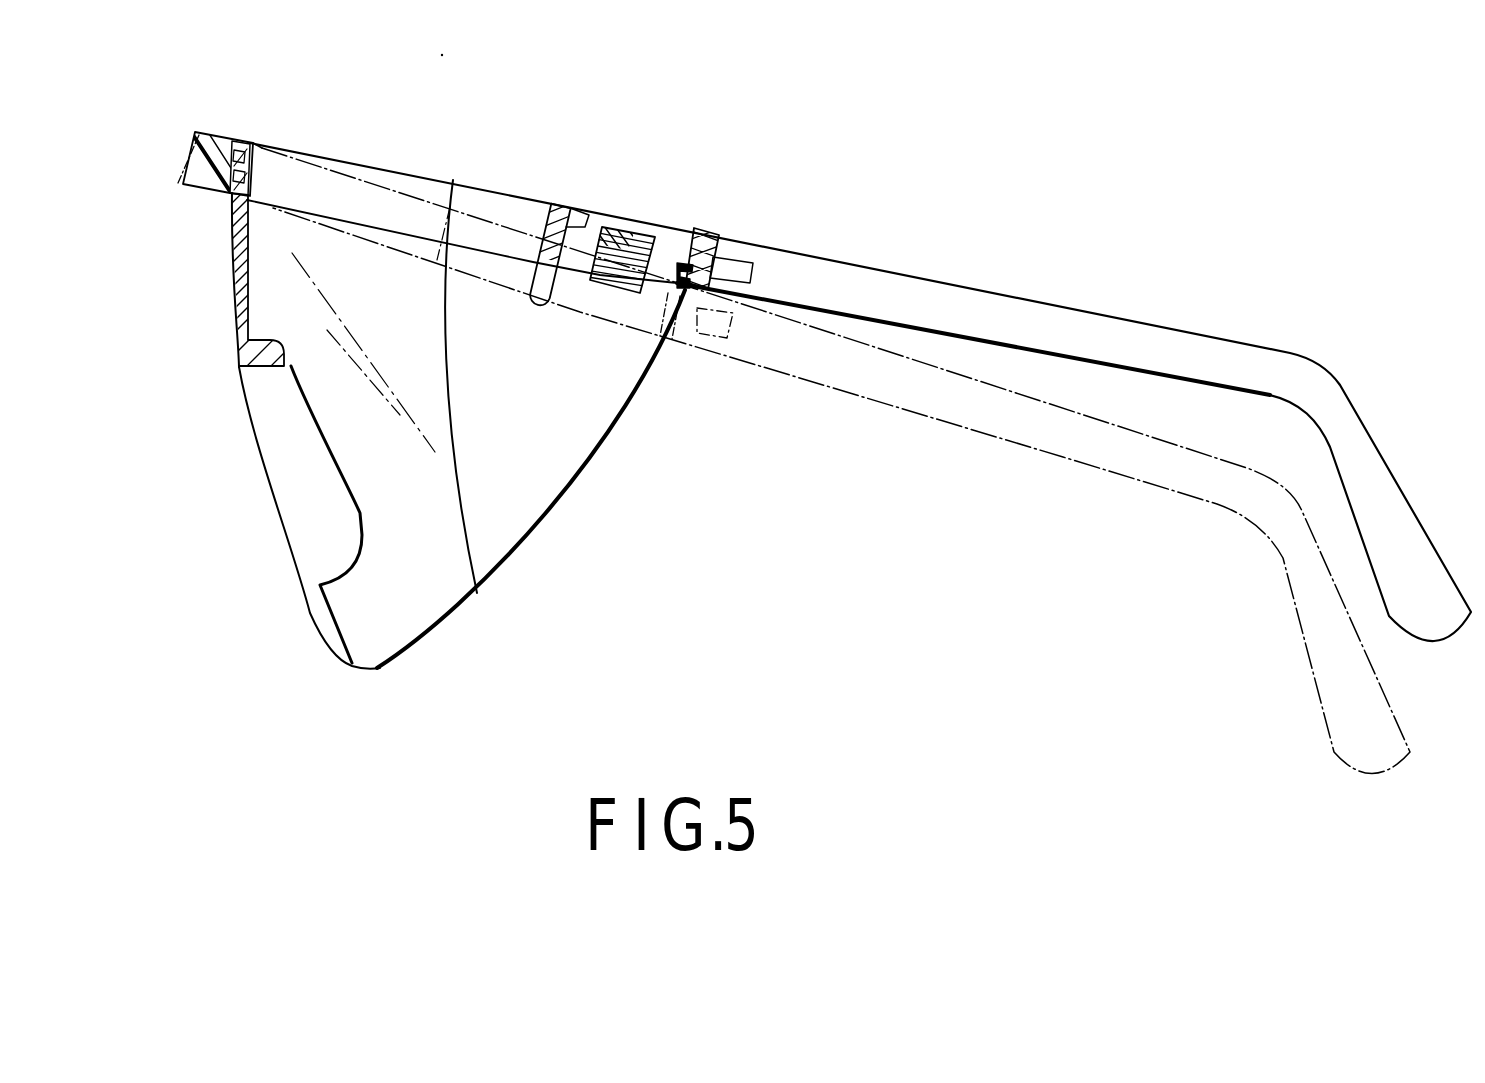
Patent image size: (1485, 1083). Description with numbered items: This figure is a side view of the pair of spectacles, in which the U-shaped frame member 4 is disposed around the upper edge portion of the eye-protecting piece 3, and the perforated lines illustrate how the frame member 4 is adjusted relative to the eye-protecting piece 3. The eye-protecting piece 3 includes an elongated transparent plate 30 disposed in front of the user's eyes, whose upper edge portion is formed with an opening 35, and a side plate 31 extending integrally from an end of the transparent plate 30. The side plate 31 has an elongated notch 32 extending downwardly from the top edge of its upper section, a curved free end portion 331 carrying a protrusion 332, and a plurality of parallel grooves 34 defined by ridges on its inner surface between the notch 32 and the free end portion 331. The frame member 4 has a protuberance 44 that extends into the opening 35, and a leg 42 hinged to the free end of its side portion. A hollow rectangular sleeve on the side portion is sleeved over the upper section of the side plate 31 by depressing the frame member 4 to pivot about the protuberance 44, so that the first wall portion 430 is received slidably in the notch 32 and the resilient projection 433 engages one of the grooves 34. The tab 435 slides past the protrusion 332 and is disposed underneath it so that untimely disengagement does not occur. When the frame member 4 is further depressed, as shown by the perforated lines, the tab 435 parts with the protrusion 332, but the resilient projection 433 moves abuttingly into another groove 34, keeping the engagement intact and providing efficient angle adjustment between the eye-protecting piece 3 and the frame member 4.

The eye-protecting piece 3 is at (232, 377).
The transparent plate 30 is at (420, 585).
The side plate 31 is at (533, 462).
The elongated notch 32 is at (578, 221).
The free end portion 331 is at (665, 312).
The protrusion 332 is at (694, 243).
The parallel grooves 34 is at (620, 283).
The opening 35 is at (246, 150).
The U-shaped frame member 4 is at (197, 130).
The legs 42 is at (934, 301).
The first wall portion 430 is at (552, 208).
The resilient projection 433 is at (622, 236).
The tab 435 is at (712, 262).
The protuberance 44 is at (243, 162).